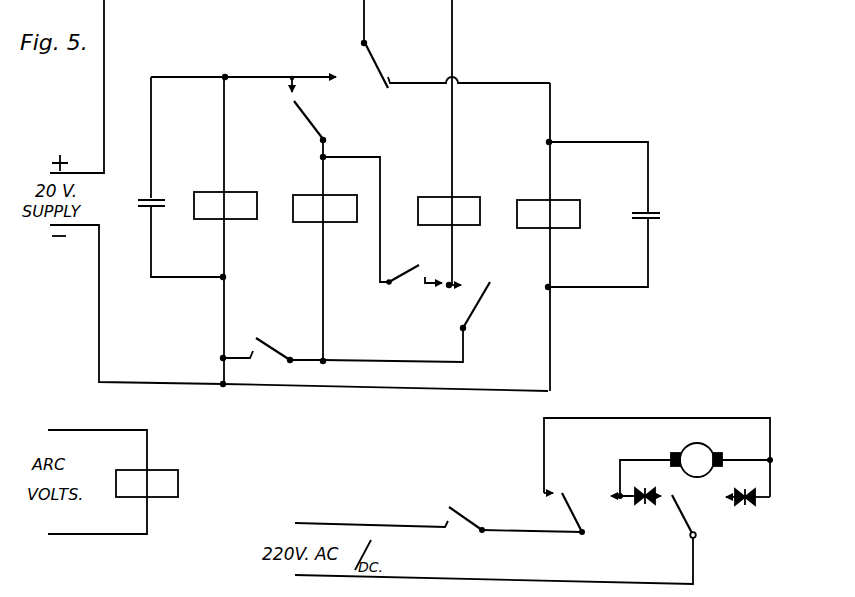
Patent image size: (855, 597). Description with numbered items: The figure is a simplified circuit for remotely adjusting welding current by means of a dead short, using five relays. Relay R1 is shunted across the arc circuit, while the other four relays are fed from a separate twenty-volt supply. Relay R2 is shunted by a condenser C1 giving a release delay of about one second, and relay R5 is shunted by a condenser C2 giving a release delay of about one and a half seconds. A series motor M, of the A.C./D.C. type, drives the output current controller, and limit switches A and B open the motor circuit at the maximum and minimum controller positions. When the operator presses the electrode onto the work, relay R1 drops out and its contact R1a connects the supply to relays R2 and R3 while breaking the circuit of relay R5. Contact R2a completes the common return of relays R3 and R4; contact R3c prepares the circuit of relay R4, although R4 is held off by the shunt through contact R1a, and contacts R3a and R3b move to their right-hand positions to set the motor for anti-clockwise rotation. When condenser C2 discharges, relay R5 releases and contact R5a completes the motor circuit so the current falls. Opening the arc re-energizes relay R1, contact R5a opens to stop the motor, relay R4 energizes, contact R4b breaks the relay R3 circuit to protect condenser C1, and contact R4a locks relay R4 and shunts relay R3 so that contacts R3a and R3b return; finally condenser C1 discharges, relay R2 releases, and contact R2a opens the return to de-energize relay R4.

The condenser C1 is at (180, 177).
The condenser C2 is at (611, 214).
The relay contact R1a is at (455, 44).
The relay contact R2a is at (343, 345).
The relay contact R3c is at (414, 266).
The relay contact R3a is at (553, 514).
The relay contact R3b is at (696, 516).
The relay contact R4b is at (340, 180).
The relay contact R4a is at (483, 306).
The relay contact R5a is at (491, 518).
The series motor M is at (696, 469).
The limit switch A is at (636, 487).
The limit switch B is at (748, 489).